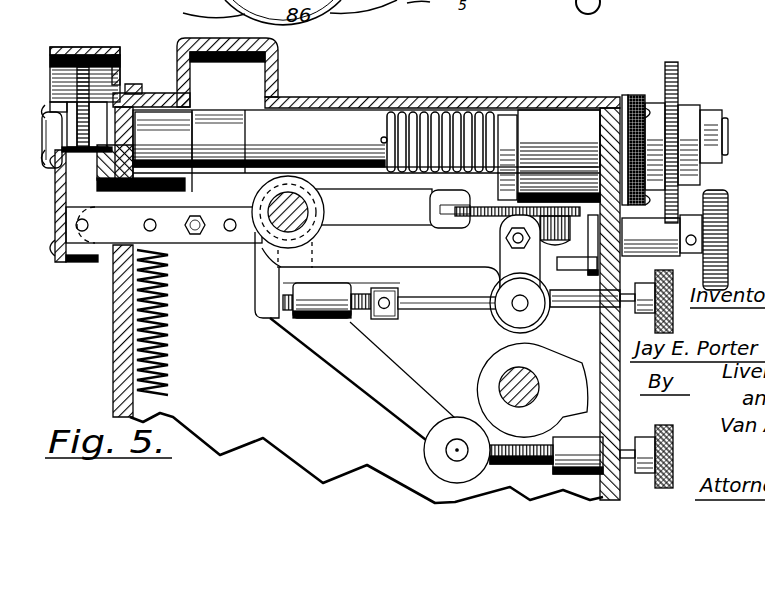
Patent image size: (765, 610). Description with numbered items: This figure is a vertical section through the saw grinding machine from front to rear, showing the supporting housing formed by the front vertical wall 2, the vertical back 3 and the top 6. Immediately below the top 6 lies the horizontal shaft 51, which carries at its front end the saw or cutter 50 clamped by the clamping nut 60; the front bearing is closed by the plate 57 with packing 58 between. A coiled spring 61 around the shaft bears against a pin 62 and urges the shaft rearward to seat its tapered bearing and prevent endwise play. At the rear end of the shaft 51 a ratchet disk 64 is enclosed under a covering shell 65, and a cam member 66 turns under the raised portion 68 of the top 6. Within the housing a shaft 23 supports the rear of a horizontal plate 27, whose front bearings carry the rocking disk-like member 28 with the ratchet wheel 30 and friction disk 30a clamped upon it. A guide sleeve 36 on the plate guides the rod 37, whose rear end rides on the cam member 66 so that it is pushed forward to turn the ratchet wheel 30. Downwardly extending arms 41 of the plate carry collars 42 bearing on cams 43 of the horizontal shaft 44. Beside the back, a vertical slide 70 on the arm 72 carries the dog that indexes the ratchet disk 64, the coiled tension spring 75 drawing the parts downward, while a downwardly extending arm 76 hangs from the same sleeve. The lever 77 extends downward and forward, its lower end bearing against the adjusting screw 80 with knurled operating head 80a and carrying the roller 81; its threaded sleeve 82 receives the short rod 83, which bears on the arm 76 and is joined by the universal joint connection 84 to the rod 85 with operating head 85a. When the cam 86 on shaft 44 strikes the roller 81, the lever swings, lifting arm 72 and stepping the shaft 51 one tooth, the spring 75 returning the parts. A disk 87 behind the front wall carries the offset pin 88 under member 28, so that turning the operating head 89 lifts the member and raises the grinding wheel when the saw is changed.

The front vertical wall 2 is at (617, 322).
The vertical back 3 is at (112, 335).
The top 6 is at (403, 97).
The shaft 23 is at (298, 205).
The horizontal plate 27 is at (402, 262).
The disk-like member 28 is at (543, 258).
The ratchet wheel 30 is at (478, 213).
The circular friction disk 30a is at (462, 218).
The guide sleeve 36 is at (370, 205).
The rod 37 is at (445, 210).
The downwardly extending arms 41 is at (497, 285).
The collars 42 is at (545, 322).
The cams 43 is at (478, 355).
The horizontal shaft 44 is at (503, 388).
The saw or cutter 50 is at (678, 66).
The horizontal shaft 51 is at (318, 125).
The plate 57 is at (646, 97).
The packing 58 is at (628, 97).
The clamping nut 60 is at (702, 110).
The coiled spring 61 is at (452, 112).
The pin 62 is at (381, 140).
The ratchet disk 64 is at (90, 48).
The covering shell 65 is at (68, 46).
The cam member 66 is at (250, 133).
The raised portion 68 is at (278, 56).
The vertical slide 70 is at (72, 180).
The arm 72 is at (112, 255).
The coiled tension spring 75 is at (170, 315).
The downwardly extending arm 76 is at (256, 290).
The lever 77 is at (322, 365).
The adjusting screw 80 is at (533, 468).
The knurled operating head 80a is at (655, 488).
The roller 81 is at (423, 453).
The interiorly threaded sleeve 82 is at (305, 322).
The short rod 83 is at (362, 322).
The universal joint connection 84 is at (388, 320).
The rod 85 is at (445, 312).
The operating head 85a is at (673, 300).
The cam 86 is at (585, 410).
The disk 87 is at (612, 235).
The pin 88 is at (556, 272).
The operating head 89 is at (730, 240).